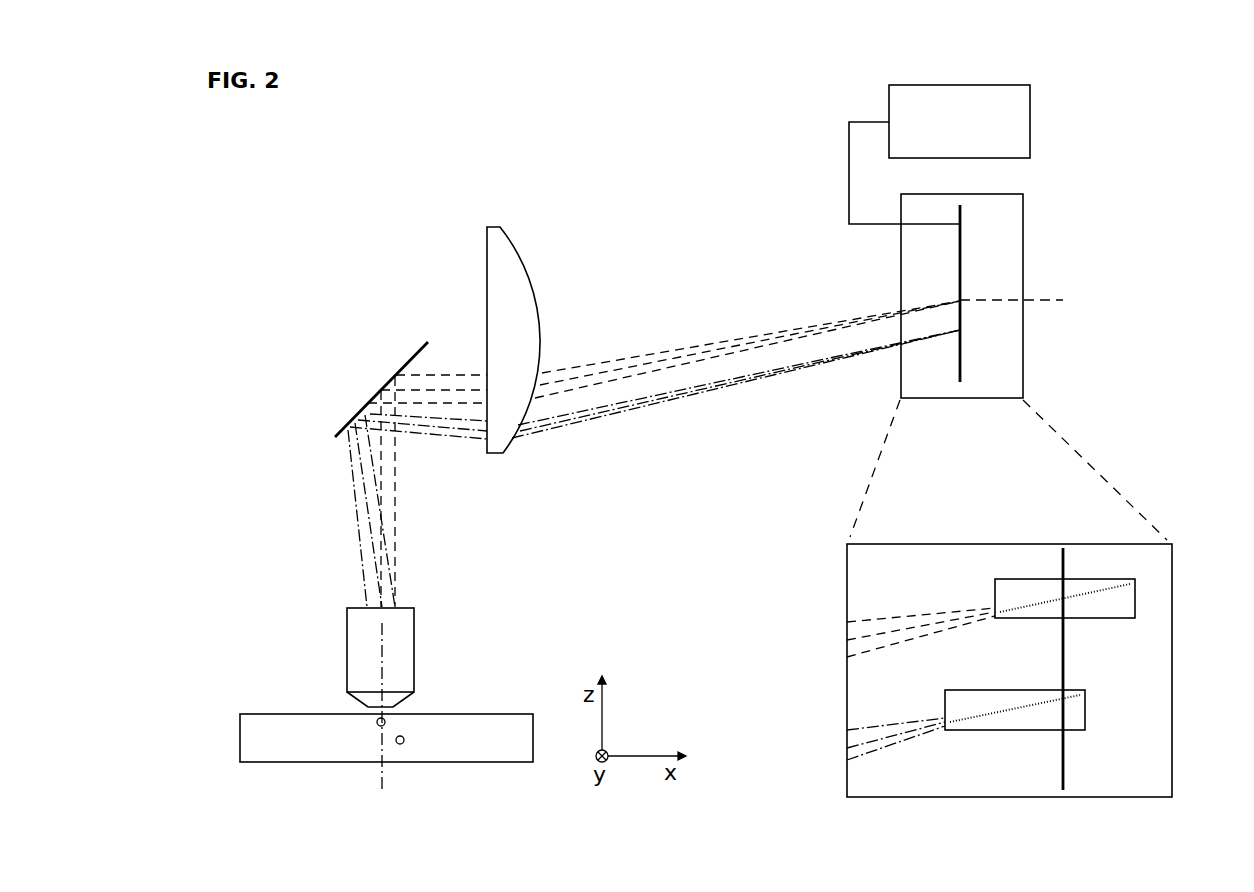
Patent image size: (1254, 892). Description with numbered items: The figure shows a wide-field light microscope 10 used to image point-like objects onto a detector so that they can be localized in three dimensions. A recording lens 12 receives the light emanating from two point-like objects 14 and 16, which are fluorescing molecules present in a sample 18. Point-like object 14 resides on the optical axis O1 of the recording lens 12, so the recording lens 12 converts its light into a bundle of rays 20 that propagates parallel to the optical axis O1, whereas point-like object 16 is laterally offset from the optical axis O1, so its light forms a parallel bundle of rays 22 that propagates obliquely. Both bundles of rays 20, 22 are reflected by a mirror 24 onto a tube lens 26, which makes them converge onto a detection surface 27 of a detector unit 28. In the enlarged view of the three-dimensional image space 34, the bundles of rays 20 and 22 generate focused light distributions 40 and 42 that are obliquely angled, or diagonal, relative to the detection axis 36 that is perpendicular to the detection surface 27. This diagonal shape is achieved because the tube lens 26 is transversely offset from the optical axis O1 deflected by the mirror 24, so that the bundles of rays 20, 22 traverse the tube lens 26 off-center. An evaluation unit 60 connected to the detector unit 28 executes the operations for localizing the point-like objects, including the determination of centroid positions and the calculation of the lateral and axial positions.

The wide-field light microscope 10 is at (697, 163).
The recording lens 12 is at (347, 652).
The point-like object 14 is at (388, 718).
The point-like object 16 is at (403, 746).
The sample 18 is at (533, 738).
The bundle of rays 20 is at (397, 508).
The bundle of rays 22 is at (350, 470).
The mirror 24 is at (391, 378).
The tube lens 26 is at (487, 297).
The detection surface 27 is at (960, 360).
The detector unit 28 is at (1023, 253).
The three-dimensional image space 34 is at (1172, 722).
The detection axis 36 is at (1057, 301).
The focused light distribution 40 is at (1090, 600).
The focused light distribution 42 is at (1020, 712).
The evaluation unit 60 is at (1030, 130).
The optical axis O1 is at (378, 773).